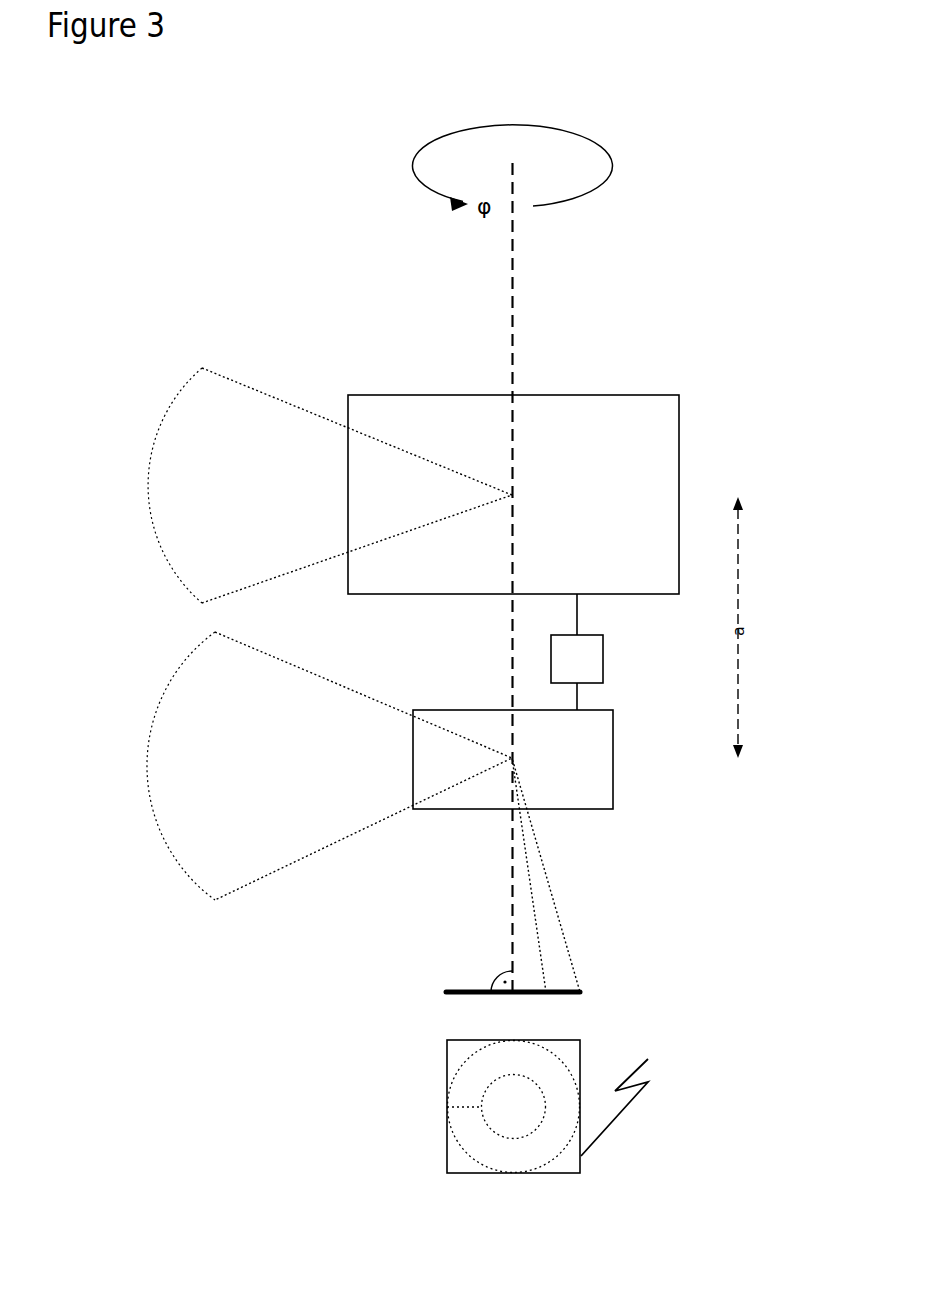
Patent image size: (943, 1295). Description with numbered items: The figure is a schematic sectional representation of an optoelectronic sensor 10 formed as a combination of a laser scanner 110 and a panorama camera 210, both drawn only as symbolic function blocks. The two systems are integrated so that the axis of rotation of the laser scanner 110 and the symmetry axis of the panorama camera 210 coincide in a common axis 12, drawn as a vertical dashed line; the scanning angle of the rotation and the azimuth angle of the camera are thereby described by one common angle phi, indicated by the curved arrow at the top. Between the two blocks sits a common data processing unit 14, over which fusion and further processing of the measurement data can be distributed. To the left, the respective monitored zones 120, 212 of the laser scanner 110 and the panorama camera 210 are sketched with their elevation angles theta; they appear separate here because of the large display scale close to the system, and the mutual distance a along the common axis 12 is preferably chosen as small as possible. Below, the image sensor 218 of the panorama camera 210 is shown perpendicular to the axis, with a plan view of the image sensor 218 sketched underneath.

The optoelectronic sensor 10 is at (784, 73).
The common axis 12 is at (632, 577).
The laser scanner 110 is at (565, 482).
The monitored zone 120 is at (325, 441).
The common data processing unit 14 is at (616, 652).
The panorama camera 210 is at (576, 793).
The monitored zone 212 is at (329, 819).
The image sensor 218 is at (575, 965).